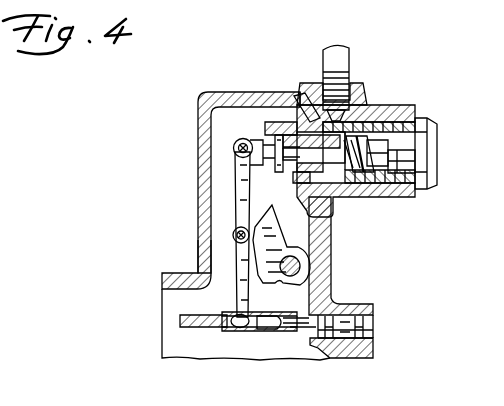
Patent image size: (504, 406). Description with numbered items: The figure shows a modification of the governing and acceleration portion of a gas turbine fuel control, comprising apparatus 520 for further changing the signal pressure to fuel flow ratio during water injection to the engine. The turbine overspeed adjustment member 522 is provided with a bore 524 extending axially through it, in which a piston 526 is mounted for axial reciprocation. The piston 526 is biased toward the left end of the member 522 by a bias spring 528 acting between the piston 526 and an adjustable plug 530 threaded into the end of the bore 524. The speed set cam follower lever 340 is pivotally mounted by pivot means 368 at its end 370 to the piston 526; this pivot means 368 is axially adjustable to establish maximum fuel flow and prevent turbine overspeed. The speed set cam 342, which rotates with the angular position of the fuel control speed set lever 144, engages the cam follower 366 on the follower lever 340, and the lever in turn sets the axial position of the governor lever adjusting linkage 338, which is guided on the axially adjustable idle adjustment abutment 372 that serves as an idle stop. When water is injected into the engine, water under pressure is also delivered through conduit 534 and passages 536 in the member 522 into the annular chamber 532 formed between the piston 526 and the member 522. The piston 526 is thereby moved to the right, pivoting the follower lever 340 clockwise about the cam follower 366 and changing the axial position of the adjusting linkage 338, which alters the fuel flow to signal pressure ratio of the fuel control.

The fuel control speed set lever 144 is at (301, 266).
The governor lever adjusting linkage 338 is at (200, 328).
The speed set cam follower lever 340 is at (208, 258).
The speed set cam 342 is at (252, 222).
The cam follower 366 is at (233, 236).
The pivot means 368 is at (239, 152).
The end of cam follower lever 370 is at (233, 146).
The idle adjustment abutment 372 is at (288, 330).
The apparatus 520 is at (228, 88).
The turbine overspeed adjustment member 522 is at (410, 190).
The bore 524 is at (356, 176).
The piston 526 is at (305, 188).
The bias spring 528 is at (365, 108).
The adjustable plug 530 is at (436, 136).
The annular chamber 532 is at (302, 126).
The conduit 534 is at (349, 56).
The passages 536 is at (302, 94).